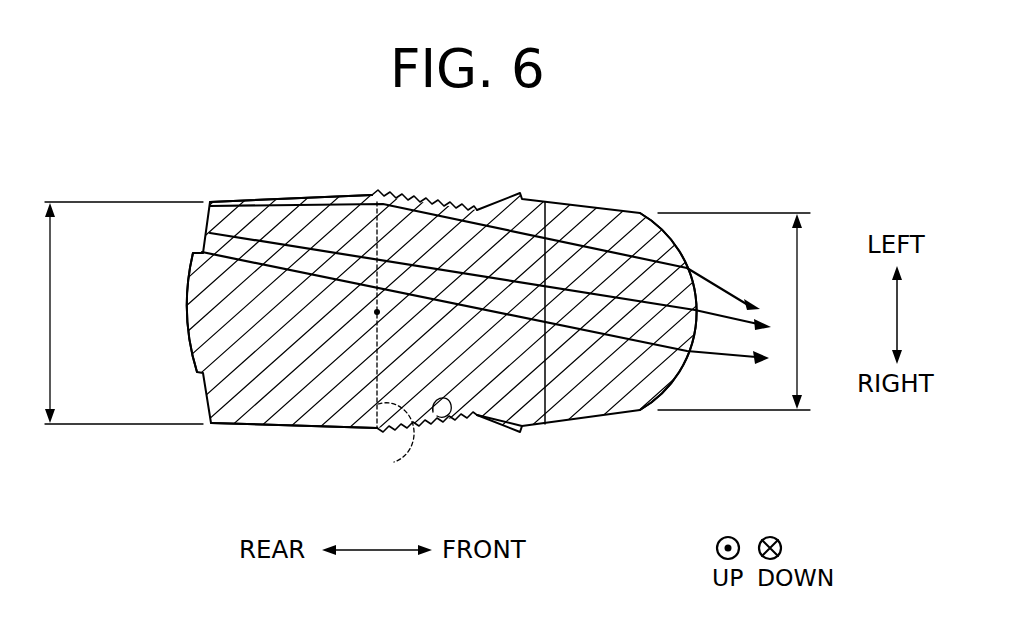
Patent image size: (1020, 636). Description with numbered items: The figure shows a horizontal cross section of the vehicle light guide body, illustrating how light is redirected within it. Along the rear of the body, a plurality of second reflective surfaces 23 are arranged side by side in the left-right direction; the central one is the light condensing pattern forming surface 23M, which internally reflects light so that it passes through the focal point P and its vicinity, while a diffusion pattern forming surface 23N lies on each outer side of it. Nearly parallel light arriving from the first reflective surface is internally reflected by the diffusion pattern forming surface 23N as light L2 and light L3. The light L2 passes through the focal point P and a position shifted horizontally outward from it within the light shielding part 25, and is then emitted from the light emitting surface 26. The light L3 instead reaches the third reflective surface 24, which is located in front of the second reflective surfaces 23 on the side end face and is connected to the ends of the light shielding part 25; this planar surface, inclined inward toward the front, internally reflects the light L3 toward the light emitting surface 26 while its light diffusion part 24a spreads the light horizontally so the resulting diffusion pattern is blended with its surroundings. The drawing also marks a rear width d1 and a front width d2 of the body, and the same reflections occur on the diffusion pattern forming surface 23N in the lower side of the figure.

The second reflective surface 23 is at (422, 318).
The diffusion pattern forming surface 23N is at (207, 222).
The light condensing pattern forming surface 23M is at (188, 292).
The light L2 is at (327, 285).
The light L3 is at (337, 202).
The light emitting surface 26 is at (673, 237).
The third reflective surface 24 is at (440, 416).
The light diffusion part 24a is at (473, 415).
The light shielding part 25 is at (399, 444).
The focal point P is at (376, 312).
The rear width d1 is at (110, 313).
The front width d2 is at (745, 311).